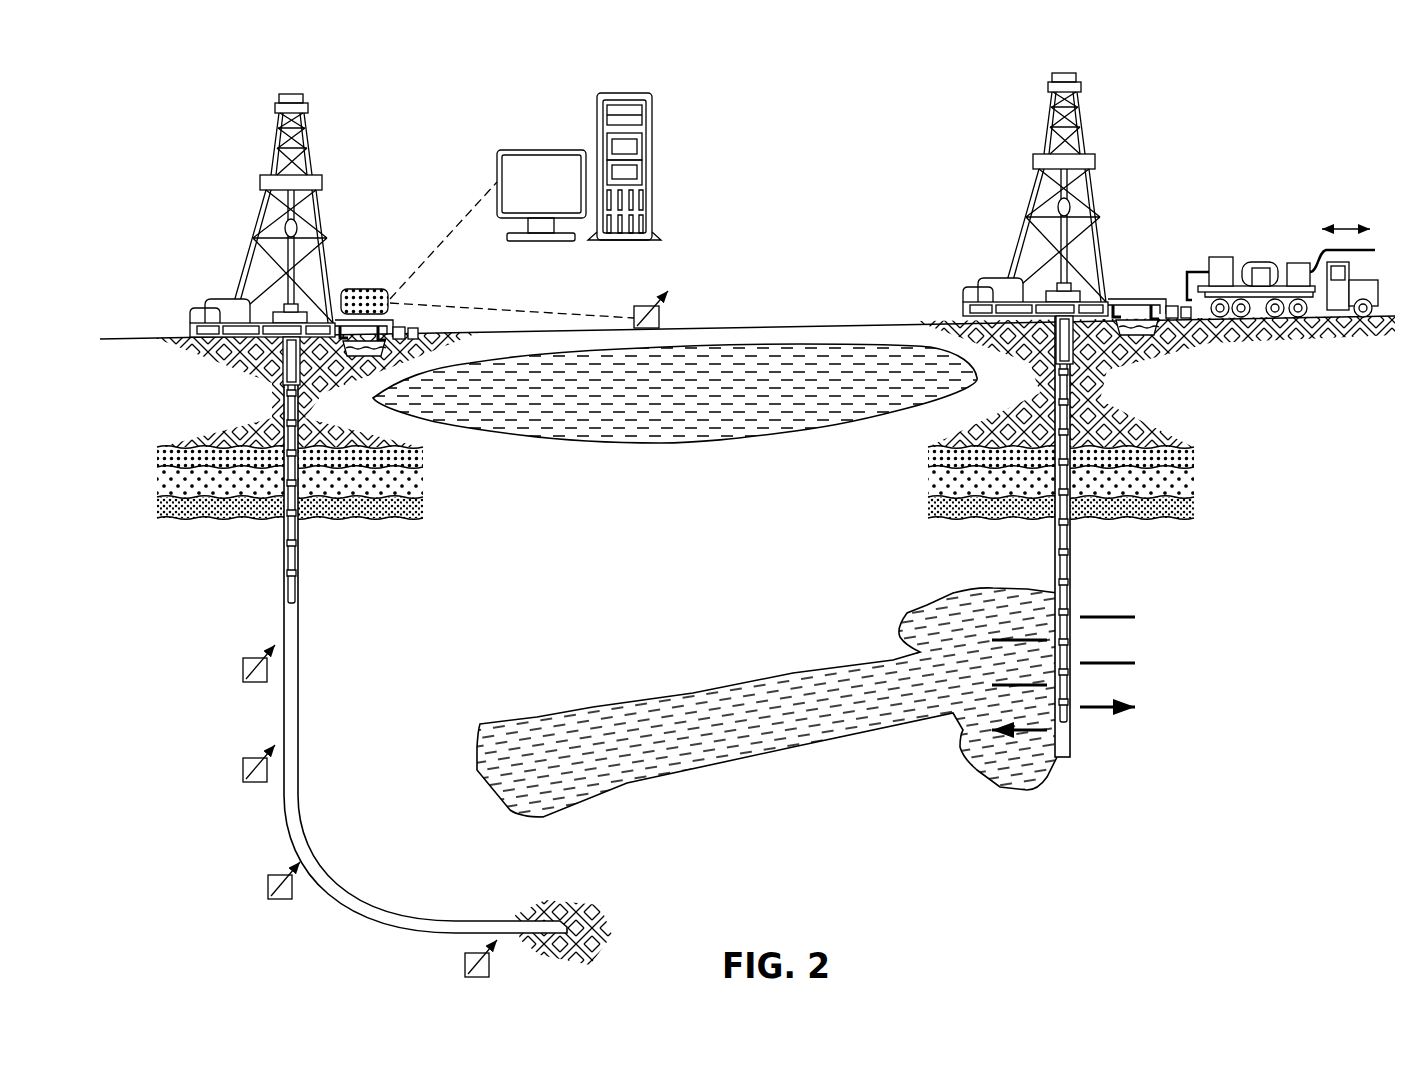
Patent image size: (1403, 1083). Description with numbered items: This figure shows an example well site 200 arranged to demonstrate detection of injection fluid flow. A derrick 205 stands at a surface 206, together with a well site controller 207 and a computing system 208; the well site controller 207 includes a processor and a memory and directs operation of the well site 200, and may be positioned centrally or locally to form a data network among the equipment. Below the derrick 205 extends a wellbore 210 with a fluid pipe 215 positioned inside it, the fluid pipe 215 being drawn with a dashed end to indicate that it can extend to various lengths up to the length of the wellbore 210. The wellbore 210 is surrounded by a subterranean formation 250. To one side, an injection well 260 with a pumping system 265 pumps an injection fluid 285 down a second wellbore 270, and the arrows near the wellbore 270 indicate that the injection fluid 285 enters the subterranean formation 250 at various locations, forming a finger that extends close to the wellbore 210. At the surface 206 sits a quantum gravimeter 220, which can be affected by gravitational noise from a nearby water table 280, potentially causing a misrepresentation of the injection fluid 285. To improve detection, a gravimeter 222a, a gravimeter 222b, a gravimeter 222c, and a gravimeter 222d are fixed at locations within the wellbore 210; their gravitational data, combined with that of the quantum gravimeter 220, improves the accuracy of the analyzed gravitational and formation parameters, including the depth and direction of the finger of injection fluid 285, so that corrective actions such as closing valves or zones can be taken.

The well site 200 is at (150, 118).
The derrick 205 is at (323, 184).
The surface 206 is at (152, 337).
The well site controller 207 is at (368, 288).
The computing system 208 is at (653, 170).
The wellbore 210 is at (300, 548).
The fluid pipe 215 is at (285, 610).
The quantum gravimeter 220 is at (647, 305).
The gravimeter 222a is at (241, 672).
The gravimeter 222b is at (241, 772).
The gravimeter 222c is at (266, 890).
The gravimeter 222d is at (463, 966).
The subterranean formation 250 is at (433, 483).
The injection well 260 is at (1096, 163).
The pumping system 265 is at (1262, 261).
The wellbore 270 is at (1073, 560).
The water table 280 is at (705, 433).
The injection fluid 285 is at (775, 753).